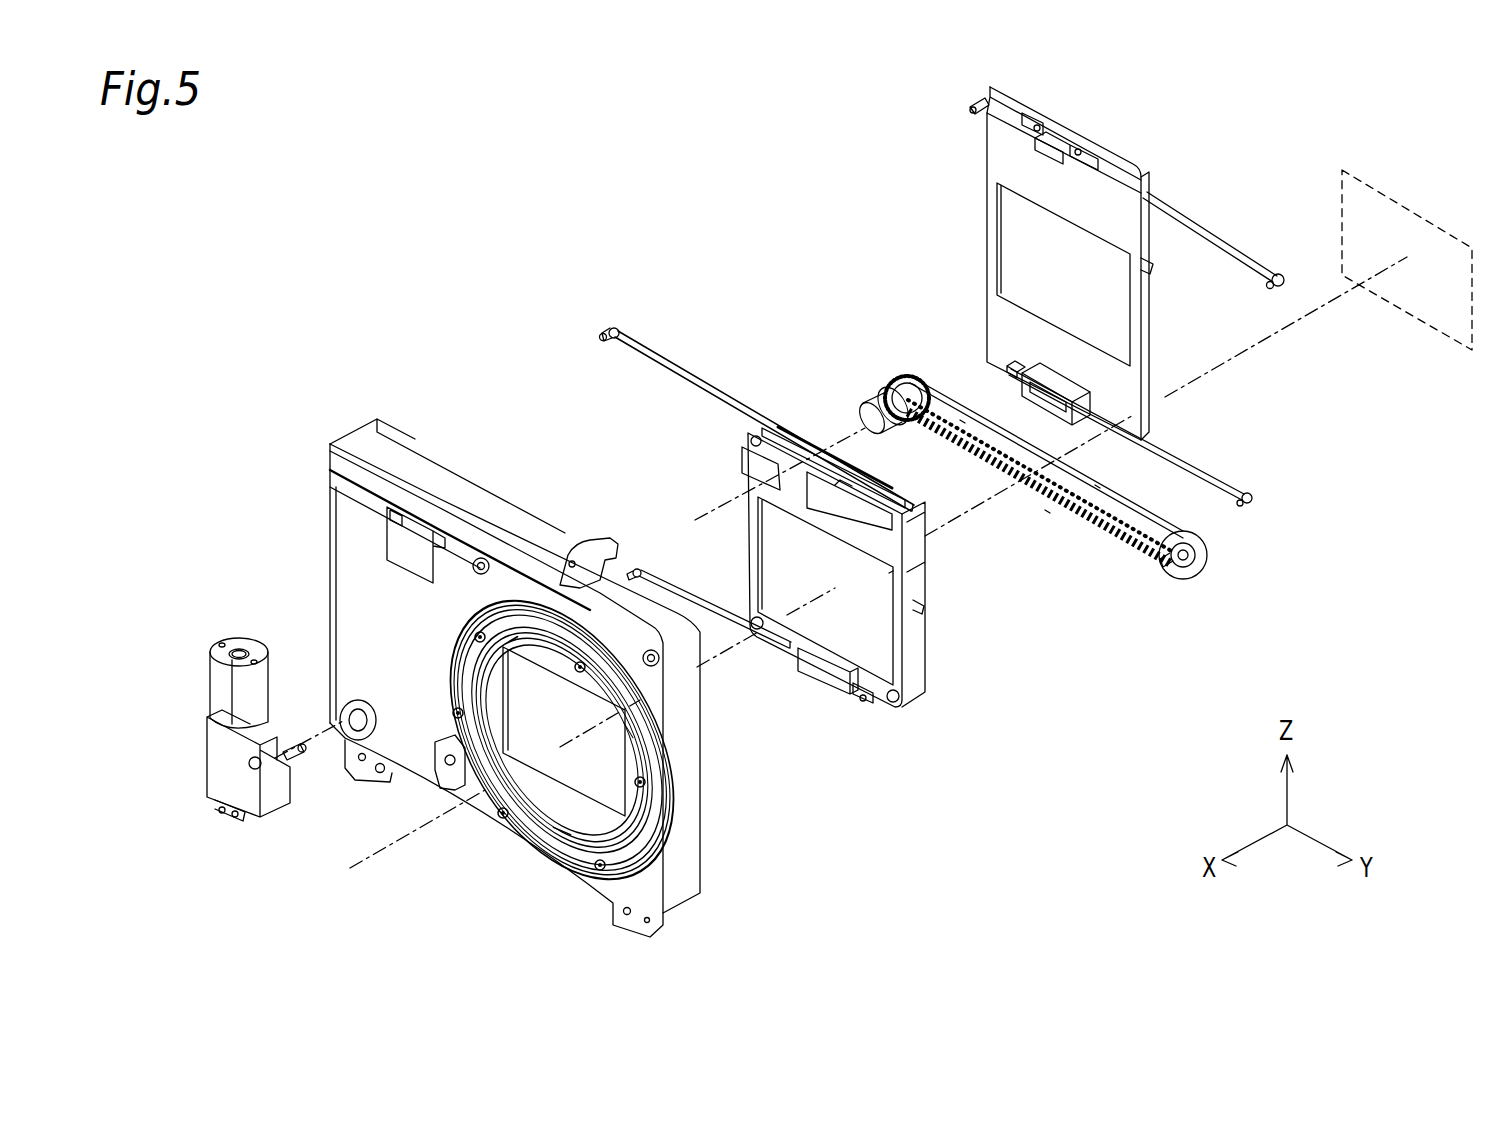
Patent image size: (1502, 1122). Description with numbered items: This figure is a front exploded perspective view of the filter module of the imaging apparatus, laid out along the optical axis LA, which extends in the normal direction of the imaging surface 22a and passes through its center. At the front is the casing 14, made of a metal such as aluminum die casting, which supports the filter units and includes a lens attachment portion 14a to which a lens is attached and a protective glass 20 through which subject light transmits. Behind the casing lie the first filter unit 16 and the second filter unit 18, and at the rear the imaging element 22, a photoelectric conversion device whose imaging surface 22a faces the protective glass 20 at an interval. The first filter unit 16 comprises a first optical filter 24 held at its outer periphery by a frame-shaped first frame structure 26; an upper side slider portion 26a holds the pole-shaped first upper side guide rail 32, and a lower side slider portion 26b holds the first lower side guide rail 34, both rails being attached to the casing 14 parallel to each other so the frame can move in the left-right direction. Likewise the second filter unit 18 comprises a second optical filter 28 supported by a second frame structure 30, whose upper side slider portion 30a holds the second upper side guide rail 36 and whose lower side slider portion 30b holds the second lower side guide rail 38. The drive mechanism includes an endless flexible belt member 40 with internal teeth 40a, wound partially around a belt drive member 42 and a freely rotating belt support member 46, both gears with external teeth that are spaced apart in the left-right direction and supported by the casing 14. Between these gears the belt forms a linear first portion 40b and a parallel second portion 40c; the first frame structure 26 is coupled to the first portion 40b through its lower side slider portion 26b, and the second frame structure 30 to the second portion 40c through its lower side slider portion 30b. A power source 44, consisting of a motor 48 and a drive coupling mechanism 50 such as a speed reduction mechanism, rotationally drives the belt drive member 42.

The casing 14 is at (475, 503).
The lens attachment portion 14a is at (552, 856).
The first filter unit 16 is at (950, 631).
The second filter unit 18 is at (945, 213).
The protective glass 20 is at (520, 682).
The imaging element 22 is at (1407, 243).
The imaging surface 22a is at (1410, 205).
The first optical filter 24 is at (775, 547).
The first frame structure 26 is at (915, 667).
The upper side slider portion 26a is at (806, 447).
The lower side slider portion 26b is at (825, 690).
The second optical filter 28 is at (1020, 250).
The second frame structure 30 is at (997, 146).
The upper side slider portion 30a is at (1058, 133).
The lower side slider portion 30b is at (1056, 398).
The first upper side guide rail 32 is at (695, 378).
The first lower side guide rail 34 is at (761, 660).
The second upper side guide rail 36 is at (1195, 222).
The second lower side guide rail 38 is at (1205, 470).
The belt member 40 is at (1206, 560).
The internal teeth 40a is at (958, 455).
The first portion 40b is at (1100, 481).
The second portion 40c is at (1043, 512).
The belt drive member 42 is at (912, 378).
The power source 44 is at (221, 609).
The belt support member 46 is at (1172, 570).
The motor 48 is at (250, 650).
The drive coupling mechanism 50 is at (244, 810).
The optical axis LA is at (385, 850).